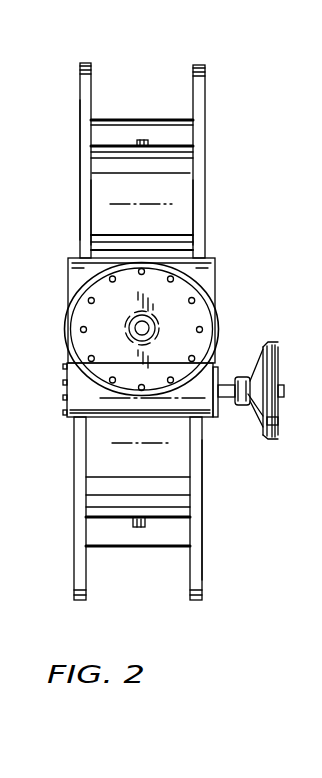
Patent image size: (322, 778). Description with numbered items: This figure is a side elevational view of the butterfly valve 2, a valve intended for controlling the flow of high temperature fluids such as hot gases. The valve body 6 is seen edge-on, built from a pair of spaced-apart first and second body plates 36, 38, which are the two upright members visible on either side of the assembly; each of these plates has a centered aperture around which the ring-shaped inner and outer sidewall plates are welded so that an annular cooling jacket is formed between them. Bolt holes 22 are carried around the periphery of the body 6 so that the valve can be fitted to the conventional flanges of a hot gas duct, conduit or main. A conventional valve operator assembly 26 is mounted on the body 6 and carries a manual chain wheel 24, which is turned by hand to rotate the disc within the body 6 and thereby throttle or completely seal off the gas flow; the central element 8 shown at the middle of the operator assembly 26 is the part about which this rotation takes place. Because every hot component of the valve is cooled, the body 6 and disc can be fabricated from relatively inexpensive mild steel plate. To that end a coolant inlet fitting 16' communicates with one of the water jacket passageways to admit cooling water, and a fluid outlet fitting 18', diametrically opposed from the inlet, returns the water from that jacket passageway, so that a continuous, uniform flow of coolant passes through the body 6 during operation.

The butterfly valve 2 is at (217, 174).
The valve body 6 is at (80, 170).
The hub 8 is at (150, 328).
The coolant inlet fitting 16' is at (155, 555).
The fluid outlet fitting 18' is at (165, 106).
The bolt holes 22 is at (80, 92).
The manual chain wheel 24 is at (262, 437).
The valve operator assembly 26 is at (203, 286).
The first body plate 36 is at (205, 205).
The second body plate 38 is at (84, 212).